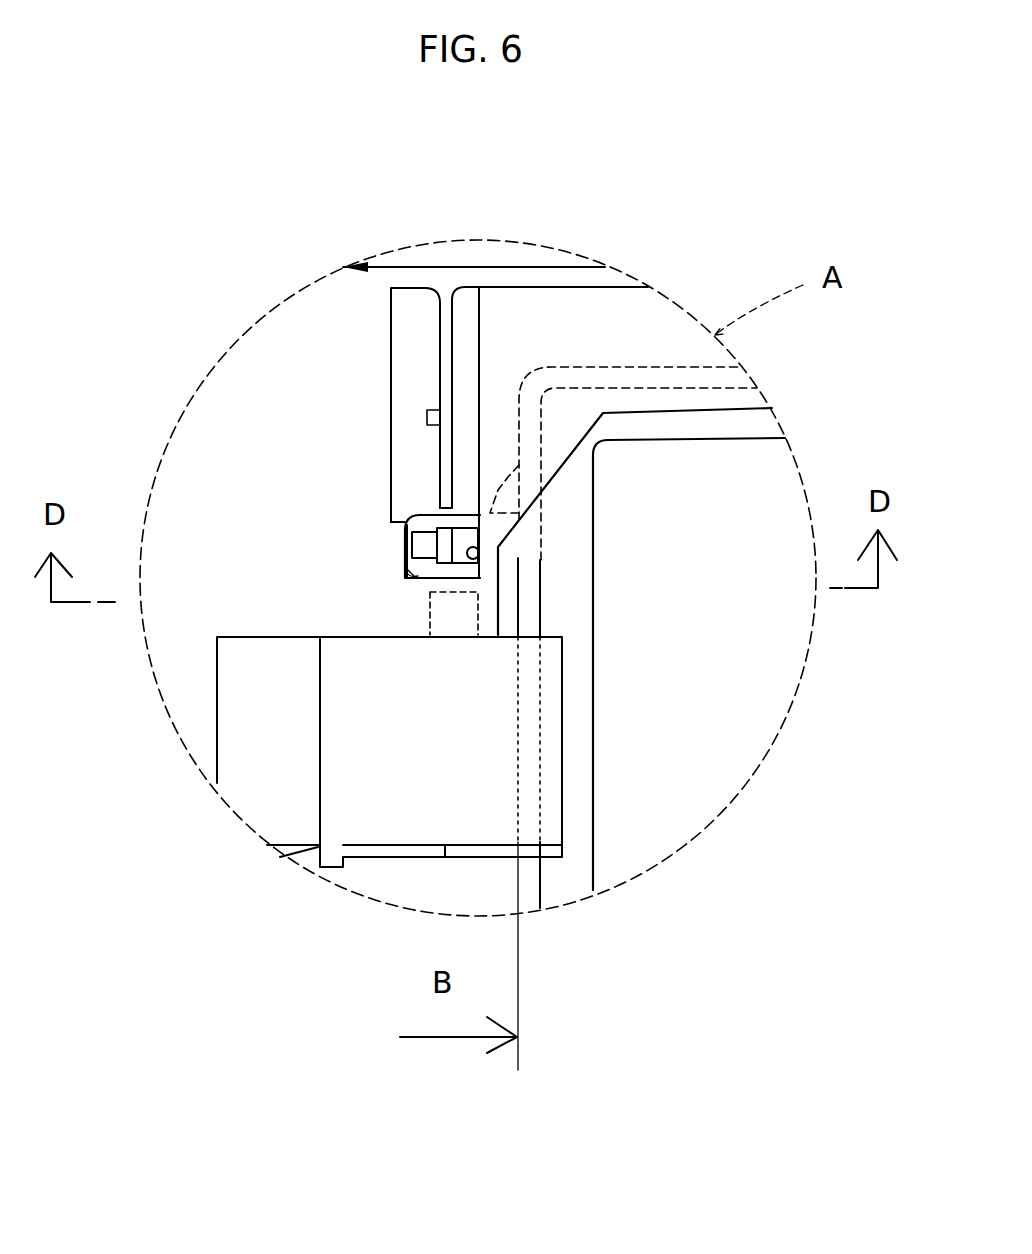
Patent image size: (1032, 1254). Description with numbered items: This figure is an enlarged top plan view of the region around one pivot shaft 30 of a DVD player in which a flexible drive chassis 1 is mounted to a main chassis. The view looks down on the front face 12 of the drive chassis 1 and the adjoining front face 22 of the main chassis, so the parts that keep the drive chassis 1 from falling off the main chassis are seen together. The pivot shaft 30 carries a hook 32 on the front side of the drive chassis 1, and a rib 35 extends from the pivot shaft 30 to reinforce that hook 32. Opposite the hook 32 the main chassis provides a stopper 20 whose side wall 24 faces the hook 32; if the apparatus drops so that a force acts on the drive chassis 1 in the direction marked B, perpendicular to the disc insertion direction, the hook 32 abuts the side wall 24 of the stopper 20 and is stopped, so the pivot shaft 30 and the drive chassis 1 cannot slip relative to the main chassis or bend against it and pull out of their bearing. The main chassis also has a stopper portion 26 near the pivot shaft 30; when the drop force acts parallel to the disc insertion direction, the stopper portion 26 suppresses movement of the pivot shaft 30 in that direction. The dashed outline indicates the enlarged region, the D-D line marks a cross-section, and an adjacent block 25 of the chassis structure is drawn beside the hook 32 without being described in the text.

The drive chassis 1 is at (668, 363).
The front face of the main chassis 22 is at (332, 382).
The stopper portion 26 is at (458, 507).
The hook 32 is at (447, 530).
The rib 35 is at (407, 542).
The pivot shaft 30 is at (407, 562).
The side wall of the stopper 24 is at (480, 558).
The stopper 20 is at (487, 568).
The front face of the drive chassis 12 is at (638, 732).
The block member 25 is at (420, 580).